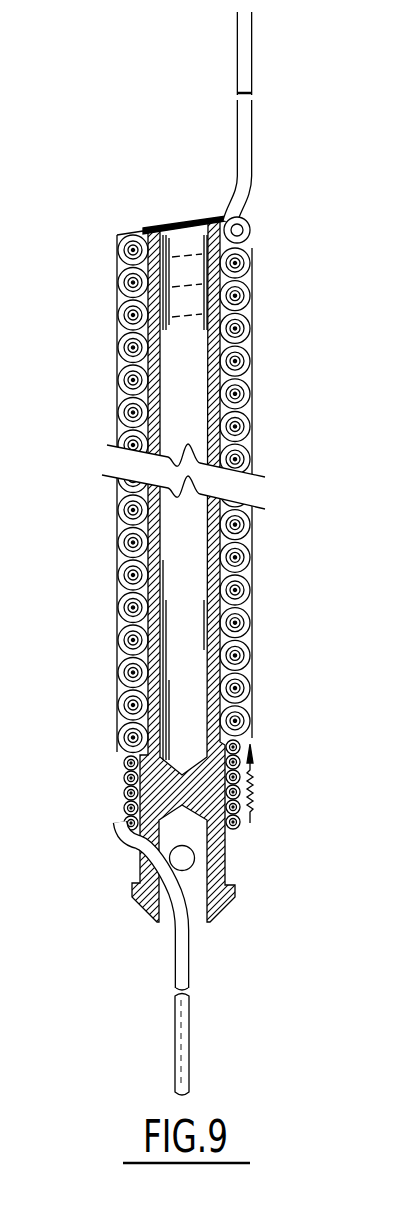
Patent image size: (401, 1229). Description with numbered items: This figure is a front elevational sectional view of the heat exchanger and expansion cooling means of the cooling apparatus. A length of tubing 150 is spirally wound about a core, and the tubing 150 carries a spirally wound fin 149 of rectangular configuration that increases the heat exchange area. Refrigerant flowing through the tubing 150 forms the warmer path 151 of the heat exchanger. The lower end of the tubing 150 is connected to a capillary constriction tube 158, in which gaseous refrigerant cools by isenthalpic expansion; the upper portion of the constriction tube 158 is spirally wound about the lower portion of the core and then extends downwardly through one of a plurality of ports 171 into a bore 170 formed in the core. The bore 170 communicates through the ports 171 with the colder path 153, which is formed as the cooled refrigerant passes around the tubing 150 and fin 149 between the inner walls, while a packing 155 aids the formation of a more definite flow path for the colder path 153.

The spirally wound fin 149 is at (254, 219).
The tubing 150 is at (253, 148).
The warmer path 151 is at (120, 247).
The colder path 153 is at (253, 790).
The packing 155 is at (253, 377).
The capillary constriction tube 158 is at (125, 771).
The bore 170 is at (196, 912).
The ports 171 is at (183, 857).